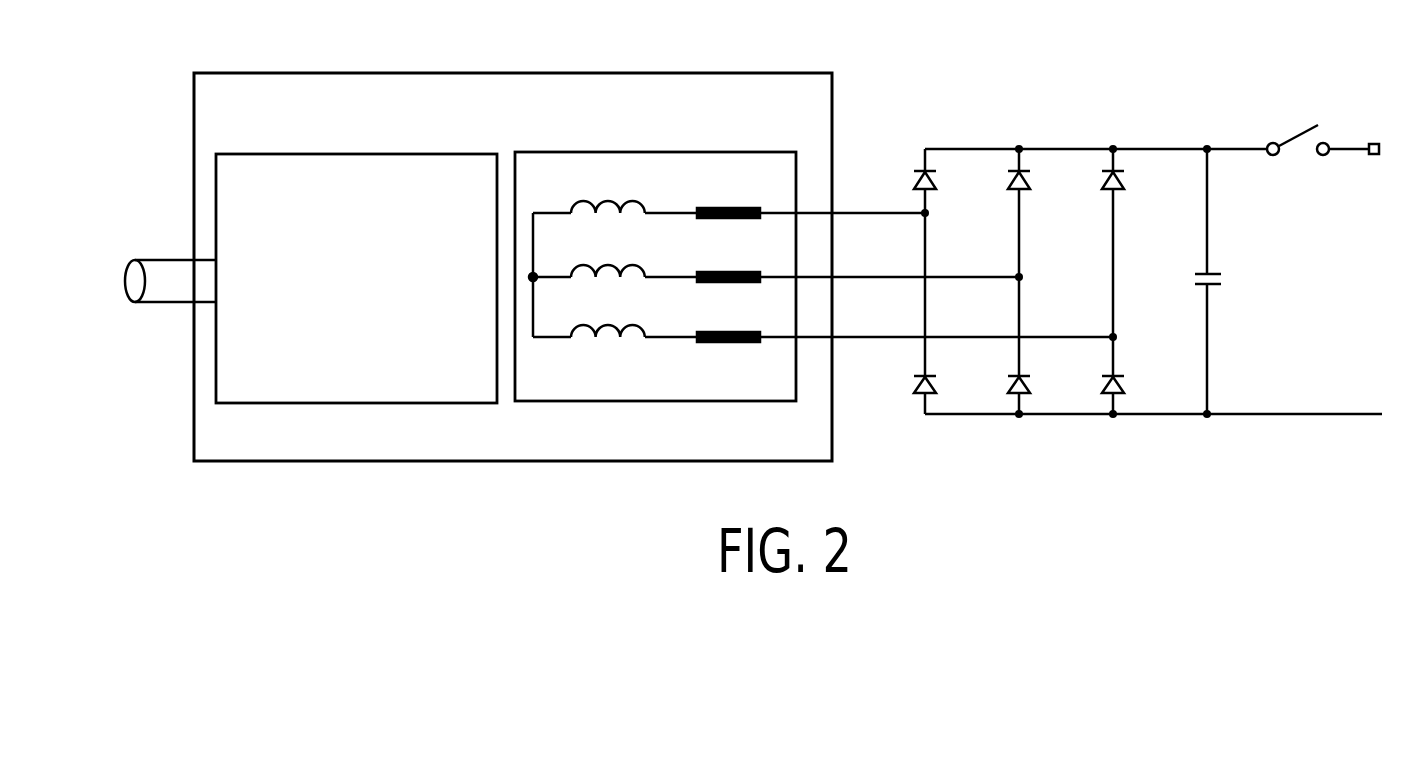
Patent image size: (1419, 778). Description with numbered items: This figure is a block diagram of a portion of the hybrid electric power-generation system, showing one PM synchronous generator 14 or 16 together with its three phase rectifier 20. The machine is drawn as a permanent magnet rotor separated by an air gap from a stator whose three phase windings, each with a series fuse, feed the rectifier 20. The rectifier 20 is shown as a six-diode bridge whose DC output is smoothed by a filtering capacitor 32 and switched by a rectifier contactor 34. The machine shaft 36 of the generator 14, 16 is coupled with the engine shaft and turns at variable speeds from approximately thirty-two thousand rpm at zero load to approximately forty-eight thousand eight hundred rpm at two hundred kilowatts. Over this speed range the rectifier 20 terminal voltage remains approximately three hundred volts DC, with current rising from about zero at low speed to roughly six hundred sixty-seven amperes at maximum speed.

The electric machine 14 is at (579, 259).
The electric machine 16 is at (186, 91).
The three phase rectifier 20 is at (1098, 103).
The filtering capacitor 32 is at (1260, 276).
The rectifier contactor 34 is at (1302, 170).
The machine shaft 36 is at (177, 283).